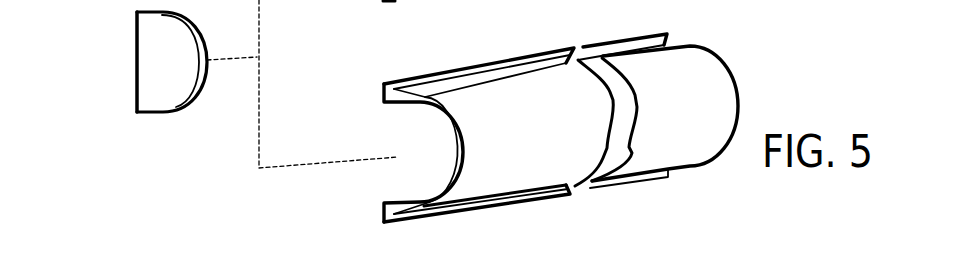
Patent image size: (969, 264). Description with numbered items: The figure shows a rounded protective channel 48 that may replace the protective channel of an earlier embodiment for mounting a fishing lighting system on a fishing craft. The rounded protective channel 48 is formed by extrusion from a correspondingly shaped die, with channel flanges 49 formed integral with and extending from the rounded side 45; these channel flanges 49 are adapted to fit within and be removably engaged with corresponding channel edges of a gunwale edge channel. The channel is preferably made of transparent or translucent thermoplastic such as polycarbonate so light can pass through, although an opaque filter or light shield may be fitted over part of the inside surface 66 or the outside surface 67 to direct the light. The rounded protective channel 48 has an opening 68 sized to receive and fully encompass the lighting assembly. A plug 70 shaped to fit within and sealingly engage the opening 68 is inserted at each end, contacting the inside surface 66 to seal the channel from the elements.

The rounded side 45 is at (713, 83).
The rounded protective channel 48 is at (510, 92).
The channel flanges 49 is at (445, 72).
The inside surface 66 is at (452, 143).
The outside surface 67 is at (553, 158).
The opening 68 is at (413, 136).
The plug 70 is at (155, 72).